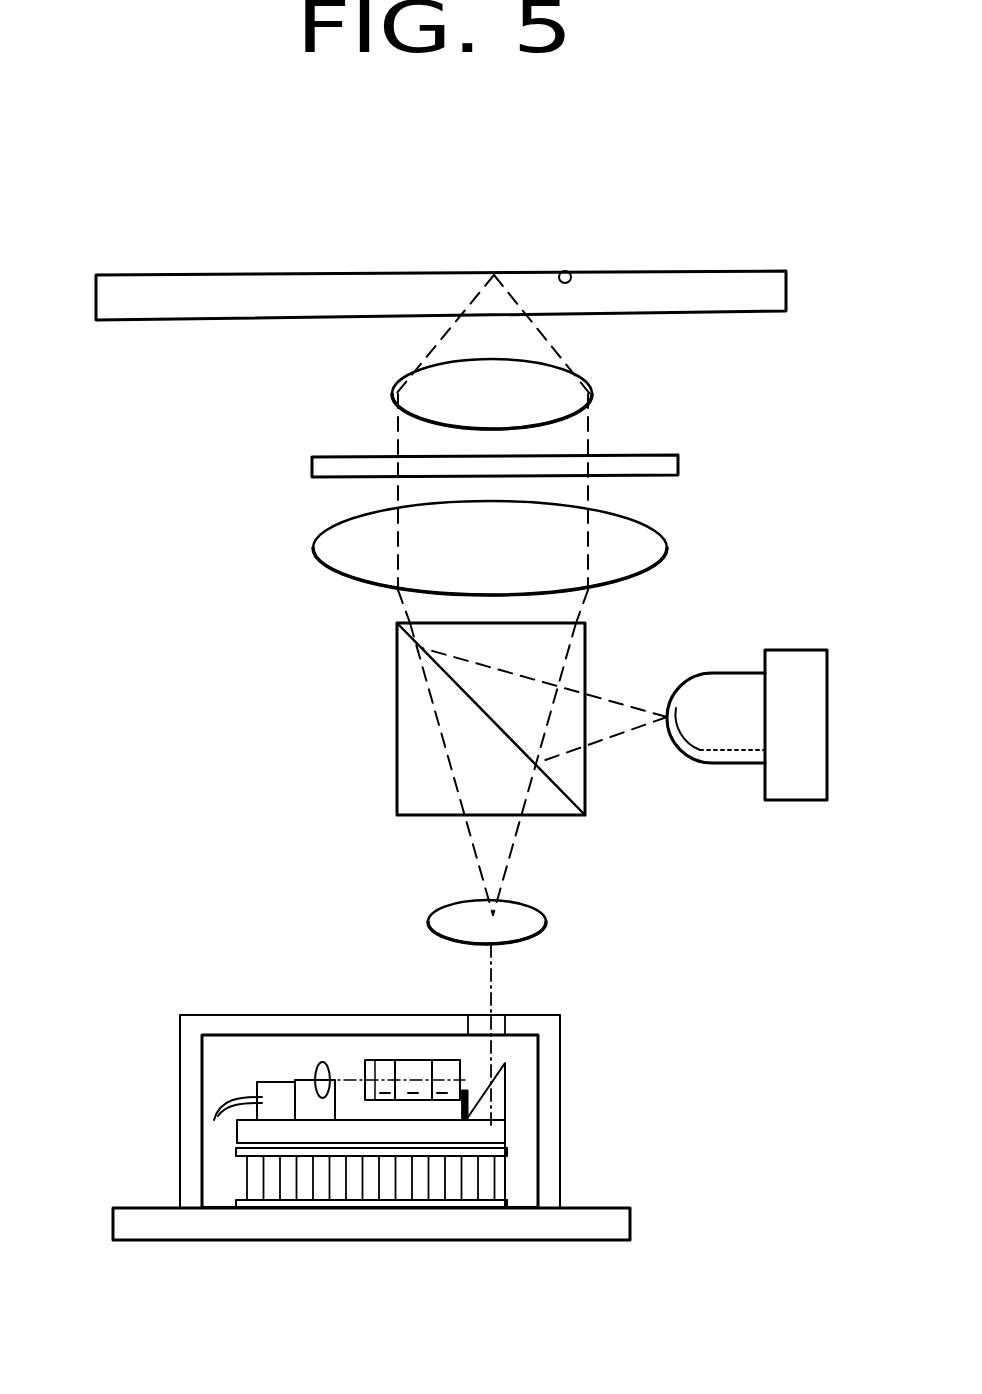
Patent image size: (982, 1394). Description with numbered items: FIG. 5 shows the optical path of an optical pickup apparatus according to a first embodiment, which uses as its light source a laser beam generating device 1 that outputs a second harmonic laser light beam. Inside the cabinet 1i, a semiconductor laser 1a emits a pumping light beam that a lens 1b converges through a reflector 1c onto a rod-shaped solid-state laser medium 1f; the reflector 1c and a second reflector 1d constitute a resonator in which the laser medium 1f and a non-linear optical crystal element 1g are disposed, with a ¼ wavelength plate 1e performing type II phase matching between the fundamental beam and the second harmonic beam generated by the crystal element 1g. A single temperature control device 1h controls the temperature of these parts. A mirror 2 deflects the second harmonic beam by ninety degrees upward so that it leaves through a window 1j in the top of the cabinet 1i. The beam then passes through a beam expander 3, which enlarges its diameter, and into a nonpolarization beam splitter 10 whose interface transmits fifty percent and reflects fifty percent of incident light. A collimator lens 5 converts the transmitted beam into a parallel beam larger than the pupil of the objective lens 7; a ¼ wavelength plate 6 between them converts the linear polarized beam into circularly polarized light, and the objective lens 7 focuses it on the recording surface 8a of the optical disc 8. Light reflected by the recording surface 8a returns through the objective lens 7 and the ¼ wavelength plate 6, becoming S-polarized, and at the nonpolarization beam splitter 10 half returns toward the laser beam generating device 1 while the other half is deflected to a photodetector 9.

The laser beam generating device 1 is at (257, 1015).
The semiconductor laser 1a is at (260, 1082).
The lens 1b is at (320, 1062).
The reflector 1c is at (370, 1062).
The reflector 1d is at (460, 1095).
The ¼ wavelength plate 1e is at (385, 1093).
The solid-state laser medium 1f is at (413, 1093).
The non-linear optical crystal element 1g is at (442, 1093).
The temperature control device 1h is at (258, 1182).
The cabinet 1i is at (190, 1152).
The window 1j is at (497, 1013).
The mirror 2 is at (487, 1103).
The beam expander 3 is at (428, 923).
The collimator lens 5 is at (313, 550).
The ¼ wavelength plate 6 is at (312, 468).
The objective lens 7 is at (392, 395).
The optical disc 8 is at (172, 265).
The recording surface 8a is at (566, 271).
The photodetector 9 is at (782, 648).
The nonpolarization beam splitter 10 is at (397, 725).